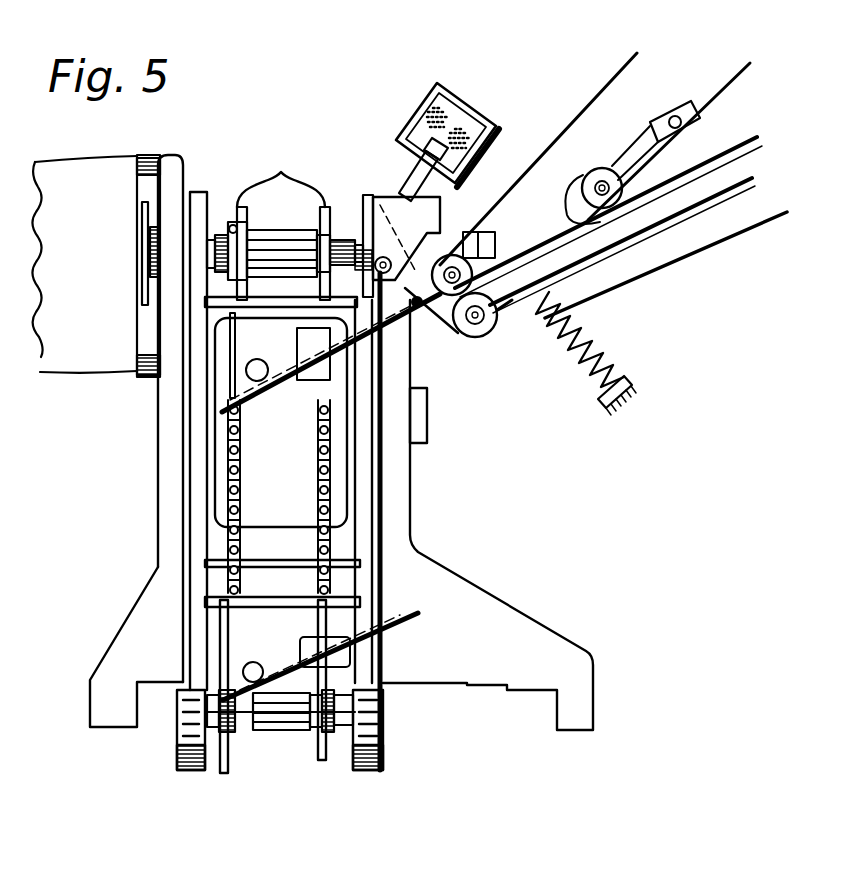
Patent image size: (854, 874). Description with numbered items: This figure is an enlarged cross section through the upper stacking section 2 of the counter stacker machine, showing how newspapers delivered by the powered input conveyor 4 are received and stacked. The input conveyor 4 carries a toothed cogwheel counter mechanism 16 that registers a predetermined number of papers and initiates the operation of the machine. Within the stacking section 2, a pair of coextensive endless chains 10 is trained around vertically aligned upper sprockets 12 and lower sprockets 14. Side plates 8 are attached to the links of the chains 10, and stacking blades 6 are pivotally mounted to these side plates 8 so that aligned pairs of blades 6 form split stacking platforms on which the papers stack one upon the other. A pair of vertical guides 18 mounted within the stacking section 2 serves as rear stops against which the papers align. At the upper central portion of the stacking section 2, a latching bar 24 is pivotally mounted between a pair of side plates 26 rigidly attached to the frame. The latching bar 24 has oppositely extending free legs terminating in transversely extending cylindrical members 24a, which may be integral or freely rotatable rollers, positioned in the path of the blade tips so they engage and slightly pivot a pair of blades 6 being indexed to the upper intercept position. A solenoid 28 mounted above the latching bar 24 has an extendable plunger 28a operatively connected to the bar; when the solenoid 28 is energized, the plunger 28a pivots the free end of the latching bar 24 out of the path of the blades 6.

The upper stacking section 2 is at (456, 511).
The input conveyor 4 is at (598, 306).
The stacking blades 6 is at (301, 377).
The side plates 8 is at (267, 620).
The endless chains 10 is at (316, 470).
The upper sprockets 12 is at (281, 178).
The lower sprockets 14 is at (303, 742).
The toothed cogwheel counter mechanism 16 is at (604, 168).
The vertical guides 18 is at (233, 398).
The latching bar 24 is at (415, 318).
The cylindrical members 24a is at (466, 332).
The side plates 26 is at (373, 196).
The solenoid 28 is at (436, 103).
The extendable plunger 28a is at (398, 182).